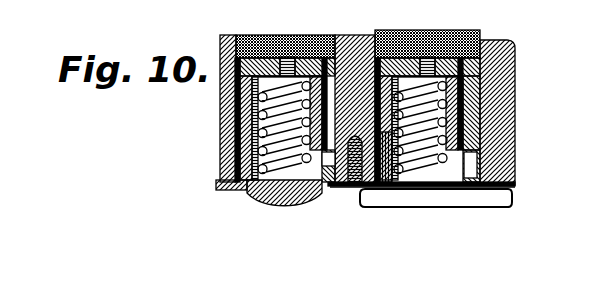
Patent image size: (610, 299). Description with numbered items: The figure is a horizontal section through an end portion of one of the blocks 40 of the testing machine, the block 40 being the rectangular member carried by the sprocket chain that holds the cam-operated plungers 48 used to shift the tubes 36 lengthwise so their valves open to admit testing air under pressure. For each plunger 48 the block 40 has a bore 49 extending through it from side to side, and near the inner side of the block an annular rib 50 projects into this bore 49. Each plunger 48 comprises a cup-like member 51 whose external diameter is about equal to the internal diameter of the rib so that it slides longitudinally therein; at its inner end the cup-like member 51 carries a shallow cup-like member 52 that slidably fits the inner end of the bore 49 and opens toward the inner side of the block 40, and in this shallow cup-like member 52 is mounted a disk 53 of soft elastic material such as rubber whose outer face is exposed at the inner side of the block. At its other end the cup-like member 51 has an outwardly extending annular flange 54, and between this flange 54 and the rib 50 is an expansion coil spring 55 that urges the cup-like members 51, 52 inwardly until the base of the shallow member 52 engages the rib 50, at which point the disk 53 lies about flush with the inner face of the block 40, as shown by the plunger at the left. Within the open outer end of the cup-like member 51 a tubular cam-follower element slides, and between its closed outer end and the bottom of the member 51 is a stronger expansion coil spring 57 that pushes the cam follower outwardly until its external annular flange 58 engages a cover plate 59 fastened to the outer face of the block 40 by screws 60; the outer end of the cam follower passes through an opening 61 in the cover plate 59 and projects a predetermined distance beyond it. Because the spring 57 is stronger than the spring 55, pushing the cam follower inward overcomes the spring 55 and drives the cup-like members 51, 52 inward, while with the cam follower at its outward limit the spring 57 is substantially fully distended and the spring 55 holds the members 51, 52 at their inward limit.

The base plate 36 is at (247, 190).
The block 40 is at (513, 90).
The cam-operated plunger 48 is at (253, 35).
The bore 49 is at (240, 155).
The annular rib 50 is at (232, 66).
The cup-like member 51 is at (222, 97).
The shallow cup-like member 52 is at (273, 36).
The disk 53 is at (322, 36).
The annular flange 54 is at (238, 134).
The expansion coil spring 55 is at (240, 112).
The expansion coil spring 57 is at (355, 184).
The external annular flange 58 is at (245, 172).
The cover plate 59 is at (515, 187).
The screw 60 is at (385, 184).
The opening 61 is at (250, 186).